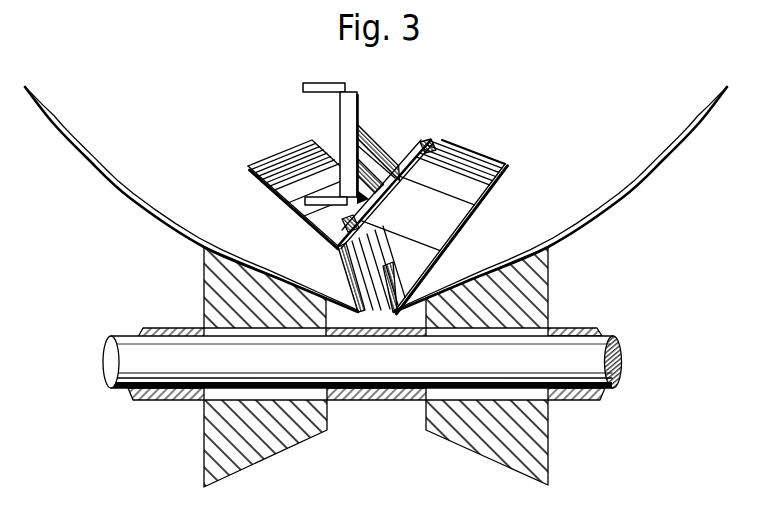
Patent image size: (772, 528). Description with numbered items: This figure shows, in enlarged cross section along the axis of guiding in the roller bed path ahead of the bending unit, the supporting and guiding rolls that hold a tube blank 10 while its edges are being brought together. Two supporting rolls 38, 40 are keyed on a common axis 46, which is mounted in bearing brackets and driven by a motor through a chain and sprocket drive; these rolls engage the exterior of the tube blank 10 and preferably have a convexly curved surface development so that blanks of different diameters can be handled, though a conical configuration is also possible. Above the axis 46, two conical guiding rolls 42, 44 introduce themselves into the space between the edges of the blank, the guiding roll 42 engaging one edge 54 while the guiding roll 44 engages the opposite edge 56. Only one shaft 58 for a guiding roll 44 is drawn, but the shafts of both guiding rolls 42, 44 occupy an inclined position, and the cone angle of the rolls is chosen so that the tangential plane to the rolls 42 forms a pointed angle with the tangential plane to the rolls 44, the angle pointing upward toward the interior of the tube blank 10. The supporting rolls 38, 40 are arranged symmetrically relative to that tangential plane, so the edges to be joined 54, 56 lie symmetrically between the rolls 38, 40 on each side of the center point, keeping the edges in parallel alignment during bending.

The tube blank 10 is at (602, 213).
The supporting roll 38 is at (273, 457).
The supporting roll 40 is at (487, 457).
The guiding roll 42 is at (293, 149).
The guiding roll 44 is at (457, 155).
The axis 46 is at (619, 336).
The edge to be joined 54 is at (407, 290).
The edge to be joined 56 is at (347, 290).
The shaft 58 is at (363, 148).